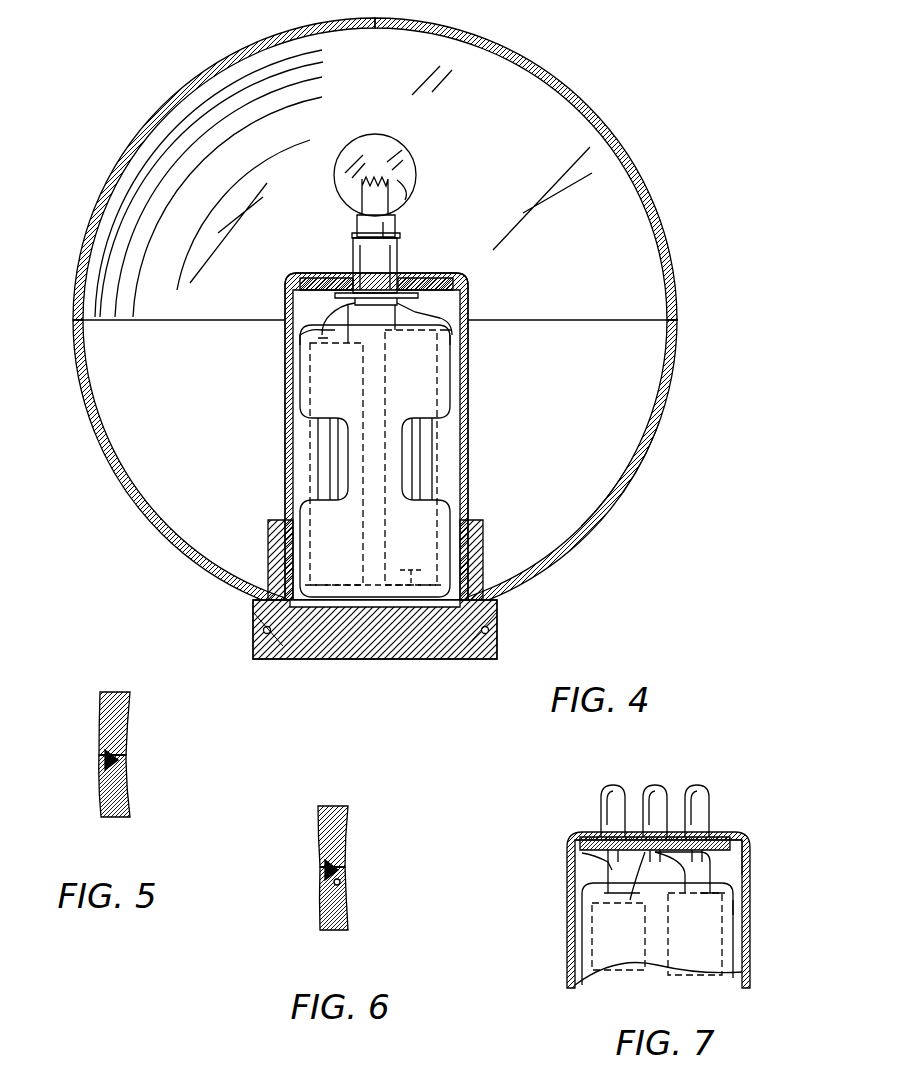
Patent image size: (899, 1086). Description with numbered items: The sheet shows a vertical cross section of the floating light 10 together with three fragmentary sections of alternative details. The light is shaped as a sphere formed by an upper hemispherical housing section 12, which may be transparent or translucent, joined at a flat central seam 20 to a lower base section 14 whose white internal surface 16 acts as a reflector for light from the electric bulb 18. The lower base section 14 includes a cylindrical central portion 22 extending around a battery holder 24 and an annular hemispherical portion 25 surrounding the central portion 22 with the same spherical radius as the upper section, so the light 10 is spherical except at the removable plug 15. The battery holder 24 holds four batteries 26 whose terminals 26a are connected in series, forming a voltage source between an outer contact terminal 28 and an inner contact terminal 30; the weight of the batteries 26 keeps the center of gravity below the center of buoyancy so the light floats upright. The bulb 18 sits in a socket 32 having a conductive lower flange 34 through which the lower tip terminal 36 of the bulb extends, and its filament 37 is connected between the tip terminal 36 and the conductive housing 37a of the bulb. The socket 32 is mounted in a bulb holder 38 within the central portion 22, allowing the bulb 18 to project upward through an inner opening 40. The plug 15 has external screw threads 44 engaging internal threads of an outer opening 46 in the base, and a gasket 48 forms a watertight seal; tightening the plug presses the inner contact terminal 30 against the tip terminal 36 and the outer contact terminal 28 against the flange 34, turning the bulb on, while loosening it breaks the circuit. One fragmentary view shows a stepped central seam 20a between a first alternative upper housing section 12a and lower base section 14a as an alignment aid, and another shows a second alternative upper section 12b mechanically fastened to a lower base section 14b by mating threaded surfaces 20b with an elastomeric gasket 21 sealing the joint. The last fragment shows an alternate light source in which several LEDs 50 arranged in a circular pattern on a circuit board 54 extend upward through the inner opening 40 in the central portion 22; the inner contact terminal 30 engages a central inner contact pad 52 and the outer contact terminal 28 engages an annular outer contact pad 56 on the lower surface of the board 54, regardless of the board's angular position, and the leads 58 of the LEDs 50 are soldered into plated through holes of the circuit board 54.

In FIG. 4, the floating light 10 is at (125, 95).
In FIG. 4, the upper hemispherical housing section 12 is at (589, 113).
In FIG. 4, the lower base section 14 is at (567, 550).
In FIG. 4, the removable plug 15 is at (350, 660).
In FIG. 4, the internal surface 16 is at (600, 492).
In FIG. 4, the electric bulb 18 is at (410, 160).
In FIG. 4, the central seam 20 is at (562, 320).
In FIG. 6, the elastomeric gasket 21 is at (343, 885).
In FIG. 4, the central portion 22 is at (465, 402).
In FIG. 7, the central portion 22 is at (750, 960).
In FIG. 4, the battery holder 24 is at (300, 383).
In FIG. 7, the battery holder 24 is at (582, 950).
In FIG. 4, the annular hemispherical portion 25 is at (641, 463).
In FIG. 4, the batteries 26 is at (305, 460).
In FIG. 7, the batteries 26 is at (590, 930).
In FIG. 4, the terminals 26a is at (468, 335).
In FIG. 7, the terminals 26a is at (750, 908).
In FIG. 4, the outer contact terminal 28 is at (318, 305).
In FIG. 7, the outer contact terminal 28 is at (605, 876).
In FIG. 4, the inner contact terminal 30 is at (465, 322).
In FIG. 7, the inner contact terminal 30 is at (682, 893).
In FIG. 4, the socket 32 is at (353, 245).
In FIG. 4, the conductive lower flange 34 is at (395, 325).
In FIG. 4, the lower tip terminal 36 is at (348, 330).
In FIG. 4, the filament 37 is at (372, 178).
In FIG. 4, the conductive housing 37a is at (395, 225).
In FIG. 4, the bulb holder 38 is at (300, 350).
In FIG. 4, the inner opening 40 is at (430, 275).
In FIG. 7, the inner opening 40 is at (710, 836).
In FIG. 4, the external screw threads 44 is at (262, 622).
In FIG. 4, the outer opening 46 is at (440, 660).
In FIG. 4, the gasket 48 is at (268, 660).
In FIG. 7, the LEDs 50 is at (700, 790).
In FIG. 7, the inner contact pad 52 is at (630, 893).
In FIG. 7, the circuit board 54 is at (576, 838).
In FIG. 7, the annular outer contact pad 56 is at (742, 866).
In FIG. 7, the leads 58 is at (600, 862).
In FIG. 5, the first alternative upper hemispherical housing section 12a is at (128, 738).
In FIG. 5, the first alternative lower base section 14a is at (128, 788).
In FIG. 5, the central seam 20a is at (100, 757).
In FIG. 6, the second alternative upper hemispherical housing section 12b is at (347, 845).
In FIG. 6, the second alternative lower base section 14b is at (347, 918).
In FIG. 6, the mating threaded surfaces 20b is at (318, 866).